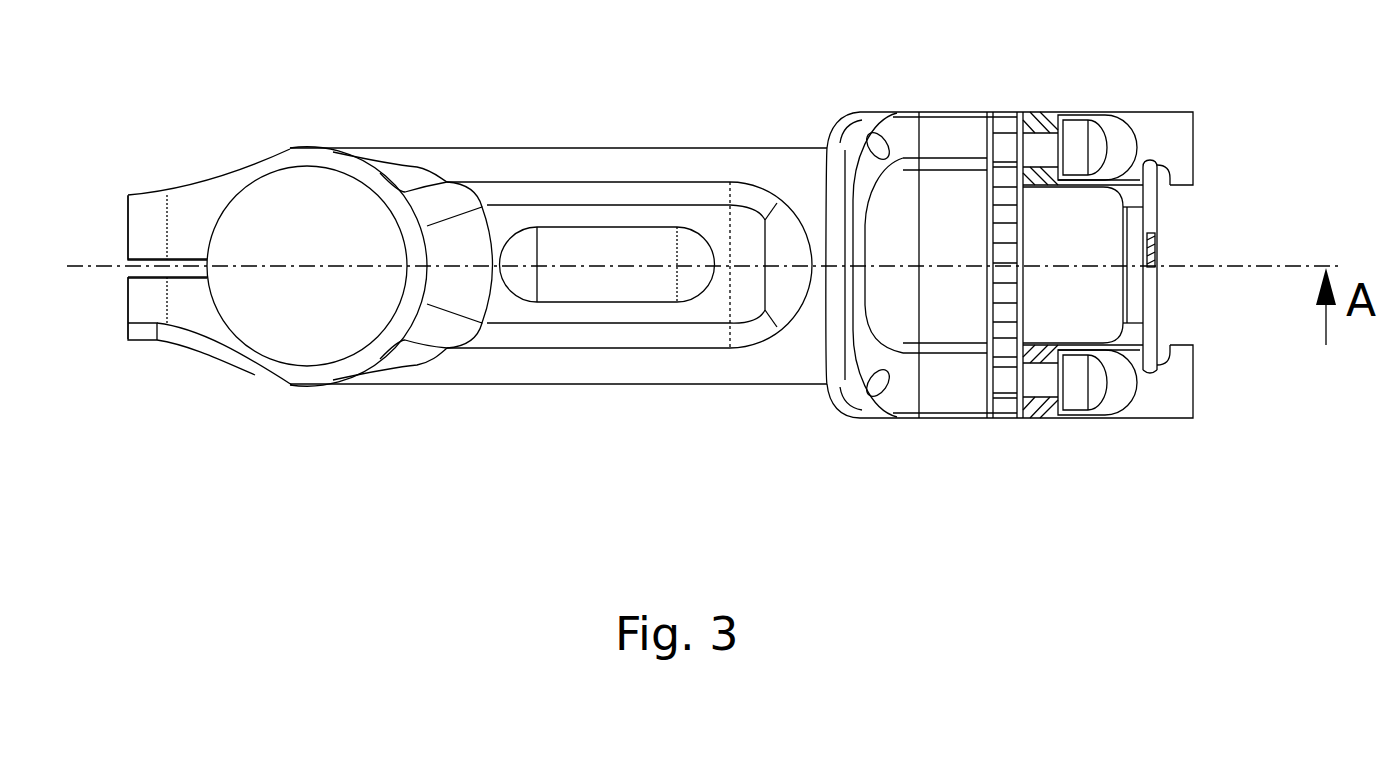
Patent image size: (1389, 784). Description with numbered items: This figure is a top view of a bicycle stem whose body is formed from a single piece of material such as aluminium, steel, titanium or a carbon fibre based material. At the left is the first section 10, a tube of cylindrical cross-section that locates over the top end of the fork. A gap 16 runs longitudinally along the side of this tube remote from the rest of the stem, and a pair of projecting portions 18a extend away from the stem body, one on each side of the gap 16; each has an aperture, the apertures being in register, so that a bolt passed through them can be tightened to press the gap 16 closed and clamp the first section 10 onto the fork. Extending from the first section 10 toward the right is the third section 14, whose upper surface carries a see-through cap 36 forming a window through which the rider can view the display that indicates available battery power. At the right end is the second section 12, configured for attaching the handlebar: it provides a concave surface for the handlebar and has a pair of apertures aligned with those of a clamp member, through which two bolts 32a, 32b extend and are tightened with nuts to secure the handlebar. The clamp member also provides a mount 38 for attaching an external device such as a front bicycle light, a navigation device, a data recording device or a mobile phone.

The first section 10 is at (128, 494).
The second section 12 is at (848, 494).
The third section 14 is at (413, 494).
The gap 16 is at (108, 281).
The projecting portions 18a is at (140, 229).
The bolt 32a is at (1075, 137).
The bolt 32b is at (1078, 400).
The see-through cap 36 is at (666, 205).
The mount 38 is at (1190, 243).